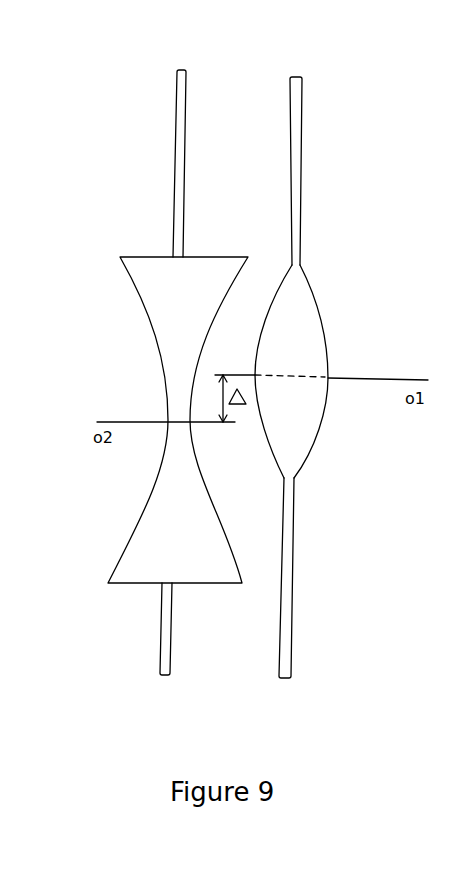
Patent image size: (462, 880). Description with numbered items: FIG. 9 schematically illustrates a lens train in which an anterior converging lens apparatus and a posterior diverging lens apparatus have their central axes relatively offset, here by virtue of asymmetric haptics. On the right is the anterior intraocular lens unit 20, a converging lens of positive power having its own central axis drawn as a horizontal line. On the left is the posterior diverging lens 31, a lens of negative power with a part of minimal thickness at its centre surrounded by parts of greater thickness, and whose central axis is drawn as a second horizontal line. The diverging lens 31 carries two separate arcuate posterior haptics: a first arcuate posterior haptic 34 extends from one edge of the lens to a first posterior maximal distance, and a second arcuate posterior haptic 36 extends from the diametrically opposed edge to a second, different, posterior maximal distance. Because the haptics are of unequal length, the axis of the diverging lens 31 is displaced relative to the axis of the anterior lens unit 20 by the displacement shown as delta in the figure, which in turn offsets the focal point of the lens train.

The second arcuate posterior haptic 36 is at (187, 117).
The diverging lens 31 is at (200, 255).
The first arcuate posterior haptic 34 is at (173, 655).
The anterior intraocular lens unit 20 is at (325, 318).